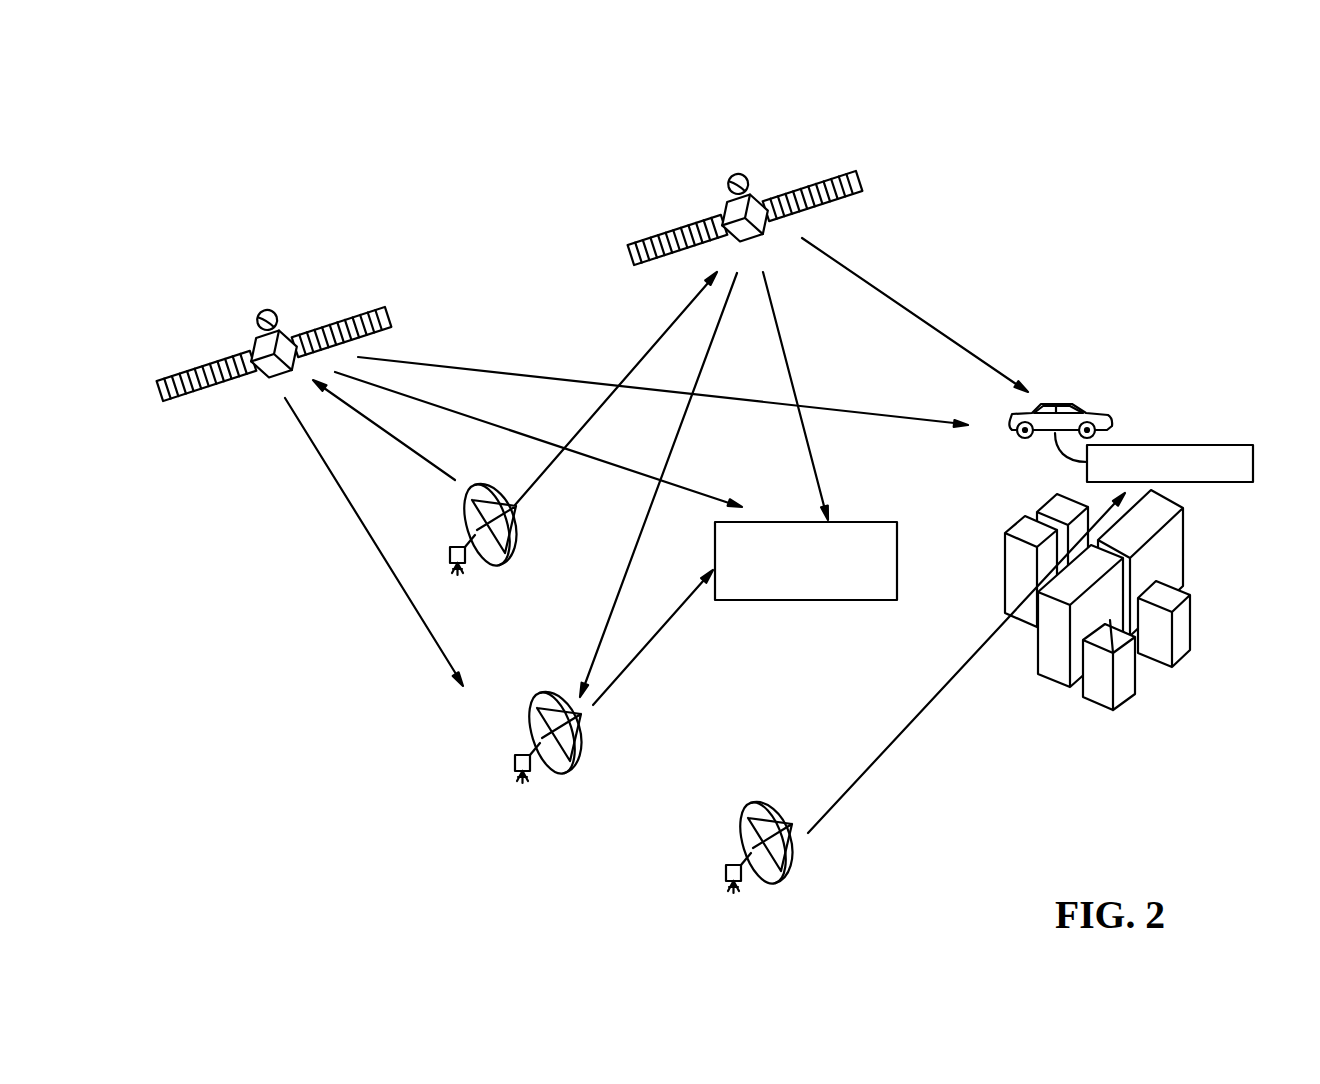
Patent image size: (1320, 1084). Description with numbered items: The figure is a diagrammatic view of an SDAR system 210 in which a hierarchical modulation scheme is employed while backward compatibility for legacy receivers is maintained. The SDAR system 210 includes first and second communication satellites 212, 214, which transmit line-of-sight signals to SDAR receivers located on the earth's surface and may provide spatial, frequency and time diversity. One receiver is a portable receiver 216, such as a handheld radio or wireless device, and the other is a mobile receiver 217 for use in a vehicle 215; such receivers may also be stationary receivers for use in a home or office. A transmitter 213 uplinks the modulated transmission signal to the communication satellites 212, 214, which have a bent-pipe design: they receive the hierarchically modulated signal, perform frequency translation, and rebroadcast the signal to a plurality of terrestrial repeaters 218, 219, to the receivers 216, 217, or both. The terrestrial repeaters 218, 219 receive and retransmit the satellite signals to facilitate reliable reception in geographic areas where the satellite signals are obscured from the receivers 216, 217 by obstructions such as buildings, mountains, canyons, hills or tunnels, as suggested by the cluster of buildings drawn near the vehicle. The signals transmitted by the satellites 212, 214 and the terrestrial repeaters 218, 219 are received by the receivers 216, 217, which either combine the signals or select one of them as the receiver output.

The SDAR system 210 is at (496, 184).
The first communication satellite 212 is at (356, 302).
The transmitter 213 is at (469, 516).
The second communication satellite 214 is at (635, 240).
The vehicle 215 is at (1082, 413).
The portable receiver 216 is at (847, 522).
The mobile receiver 217 is at (1148, 444).
The terrestrial repeater 218 is at (533, 726).
The terrestrial repeater 219 is at (743, 839).